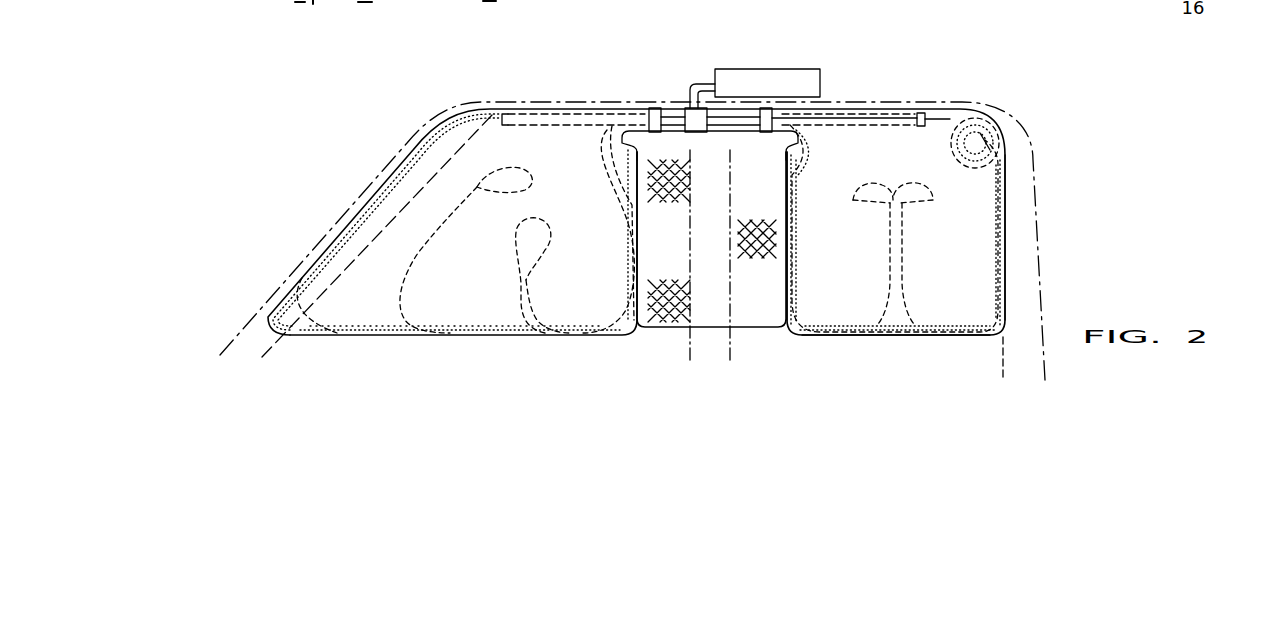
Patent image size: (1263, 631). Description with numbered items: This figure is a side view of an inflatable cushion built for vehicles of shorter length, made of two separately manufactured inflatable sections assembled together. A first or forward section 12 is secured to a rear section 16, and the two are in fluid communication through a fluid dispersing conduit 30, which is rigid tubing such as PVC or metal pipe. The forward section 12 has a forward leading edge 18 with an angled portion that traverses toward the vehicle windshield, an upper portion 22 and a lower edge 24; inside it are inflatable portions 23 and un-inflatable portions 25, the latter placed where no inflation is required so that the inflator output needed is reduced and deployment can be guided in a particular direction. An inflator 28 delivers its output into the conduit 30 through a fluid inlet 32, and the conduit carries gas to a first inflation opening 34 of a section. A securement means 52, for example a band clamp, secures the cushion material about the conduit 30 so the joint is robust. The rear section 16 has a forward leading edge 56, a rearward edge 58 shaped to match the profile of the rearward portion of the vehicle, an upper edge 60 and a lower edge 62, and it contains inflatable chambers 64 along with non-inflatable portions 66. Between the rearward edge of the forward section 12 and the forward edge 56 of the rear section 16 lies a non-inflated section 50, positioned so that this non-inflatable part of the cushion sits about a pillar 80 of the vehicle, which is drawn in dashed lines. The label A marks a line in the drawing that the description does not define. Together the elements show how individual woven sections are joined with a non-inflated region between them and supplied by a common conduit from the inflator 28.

The first forward section 12 is at (528, 337).
The rear section 16 is at (940, 337).
The forward leading edge 18 is at (360, 209).
The upper portion 22 is at (540, 110).
The inflatable portions 23 is at (515, 145).
The lower edge 24 is at (450, 338).
The un-inflatable portions 25 is at (396, 338).
The inflator 28 is at (815, 88).
The fluid dispersing conduit 30 is at (676, 118).
The fluid inlet 32 is at (697, 108).
The first inflation opening 34 is at (790, 112).
The non-inflated section 50 is at (652, 336).
The securement means 52 is at (653, 108).
The forward leading edge 56 is at (783, 310).
The rearward edge 58 is at (1004, 308).
The upper edge 60 is at (937, 110).
The lower edge 62 is at (883, 338).
The inflatable portions or chambers 64 is at (963, 188).
The non-inflatable portions 66 is at (1005, 192).
The pillar 80 is at (697, 338).
The axis A is at (297, 267).